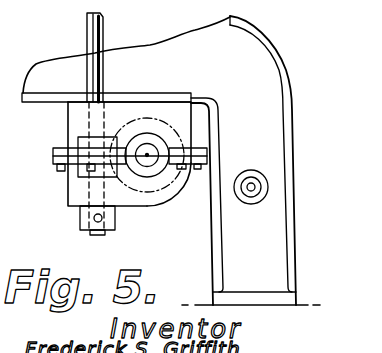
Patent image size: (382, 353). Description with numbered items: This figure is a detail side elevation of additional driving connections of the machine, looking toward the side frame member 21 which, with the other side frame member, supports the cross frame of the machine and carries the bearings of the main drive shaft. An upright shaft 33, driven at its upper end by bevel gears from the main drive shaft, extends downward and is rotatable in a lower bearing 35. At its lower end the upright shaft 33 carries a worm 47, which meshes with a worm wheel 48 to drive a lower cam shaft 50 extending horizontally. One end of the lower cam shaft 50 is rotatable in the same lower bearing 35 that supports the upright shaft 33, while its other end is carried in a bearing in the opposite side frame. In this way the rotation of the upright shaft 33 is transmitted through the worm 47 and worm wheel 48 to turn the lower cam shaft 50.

The side frame member 21 is at (202, 28).
The upright shaft 33 is at (88, 30).
The lower bearing 35 is at (68, 189).
The worm 47 is at (78, 142).
The worm wheel 48 is at (167, 196).
The lower cam shaft 50 is at (147, 155).